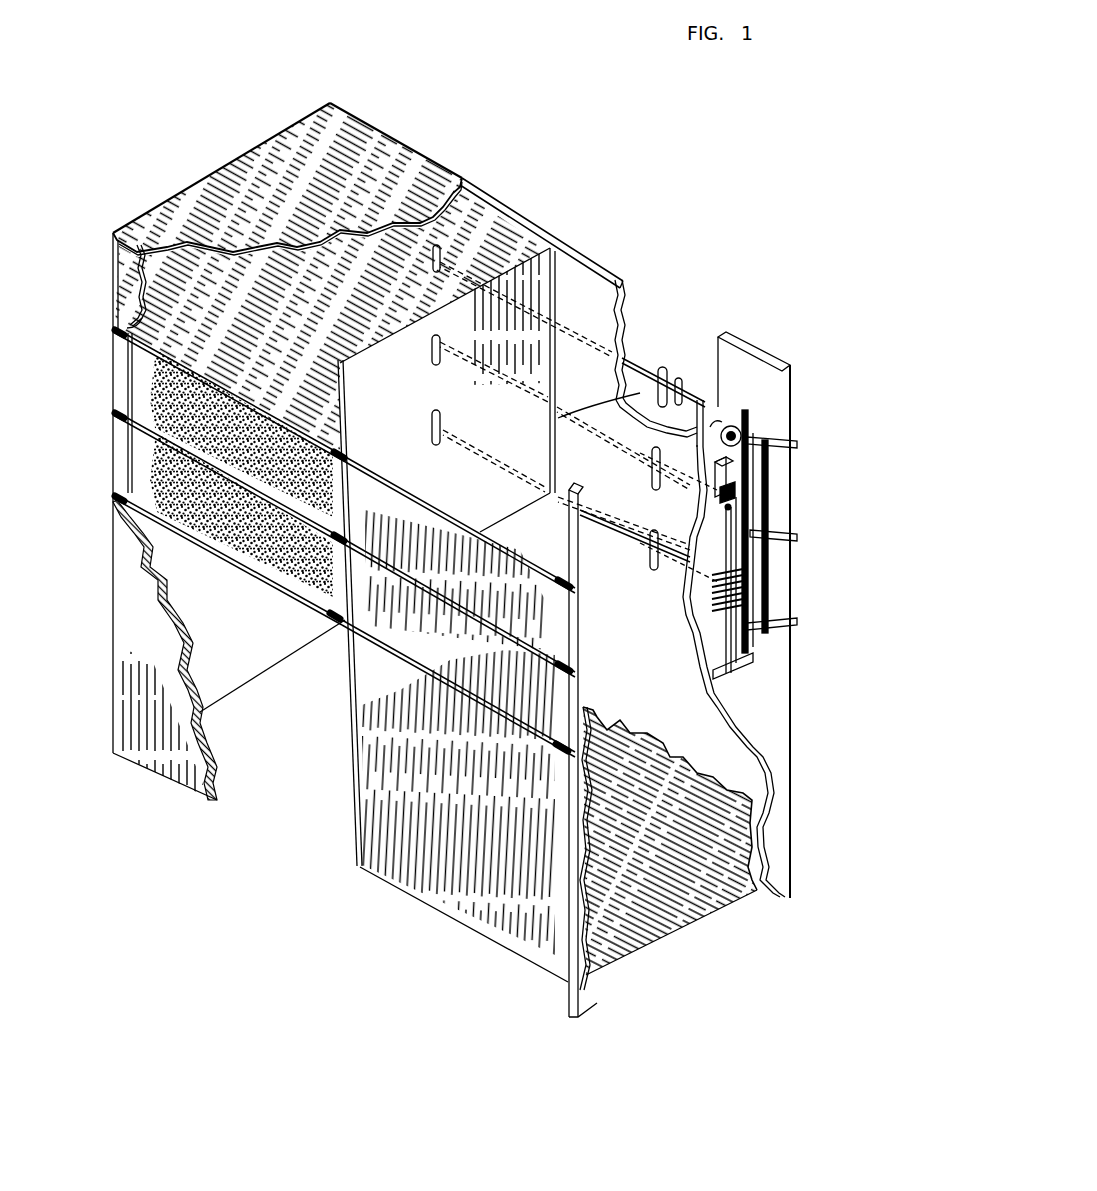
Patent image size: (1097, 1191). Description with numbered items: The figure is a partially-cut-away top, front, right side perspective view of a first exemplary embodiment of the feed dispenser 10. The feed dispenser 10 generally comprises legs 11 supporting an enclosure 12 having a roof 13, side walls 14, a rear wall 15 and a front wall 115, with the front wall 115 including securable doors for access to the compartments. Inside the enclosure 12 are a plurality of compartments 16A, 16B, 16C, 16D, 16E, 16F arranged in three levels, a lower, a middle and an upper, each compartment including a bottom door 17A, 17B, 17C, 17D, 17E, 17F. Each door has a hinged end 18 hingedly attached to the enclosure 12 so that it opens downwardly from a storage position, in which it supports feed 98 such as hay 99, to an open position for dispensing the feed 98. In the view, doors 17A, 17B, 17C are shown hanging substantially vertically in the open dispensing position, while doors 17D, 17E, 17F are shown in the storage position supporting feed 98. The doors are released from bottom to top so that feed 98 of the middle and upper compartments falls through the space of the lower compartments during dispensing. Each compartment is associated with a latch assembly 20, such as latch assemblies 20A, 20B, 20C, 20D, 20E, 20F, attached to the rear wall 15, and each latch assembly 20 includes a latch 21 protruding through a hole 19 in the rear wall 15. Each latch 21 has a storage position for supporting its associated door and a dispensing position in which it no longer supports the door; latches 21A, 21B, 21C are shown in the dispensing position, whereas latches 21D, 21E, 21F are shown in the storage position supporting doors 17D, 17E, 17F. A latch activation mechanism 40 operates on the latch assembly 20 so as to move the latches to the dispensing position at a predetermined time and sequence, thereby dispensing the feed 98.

The feed dispenser 10 is at (726, 268).
The legs 11 is at (583, 1006).
The enclosure 12 is at (582, 193).
The roof 13 is at (352, 136).
The side walls 14 is at (175, 277).
The rear wall 15 is at (519, 215).
The compartment 16A is at (559, 404).
The compartment 16B is at (563, 355).
The compartment 16C is at (569, 290).
The compartment 16D is at (102, 449).
The compartment 16E is at (126, 390).
The compartment 16F is at (104, 322).
The bottom door 17A is at (410, 882).
The bottom door 17B is at (333, 623).
The bottom door 17C is at (367, 498).
The bottom door 17D is at (179, 527).
The bottom door 17E is at (113, 413).
The bottom door 17F is at (303, 293).
The hinged end 18 is at (257, 532).
The hole 19 is at (440, 248).
The latch assembly 20 is at (678, 358).
The latch assembly 20A is at (672, 571).
The latch assembly 20B is at (678, 490).
The latch assembly 20C is at (701, 392).
The latch assembly 20D is at (511, 468).
The latch assembly 20E is at (527, 388).
The latch assembly 20F is at (462, 262).
The latch 21 is at (655, 388).
The latch 21A is at (647, 563).
The latch 21B is at (651, 481).
The latch 21C is at (612, 428).
The latch 21D is at (432, 438).
The latch 21E is at (430, 363).
The latch 21F is at (431, 262).
The latch activation mechanism 40 is at (735, 688).
The feed 98 is at (147, 370).
The hay 99 is at (713, 908).
The front wall 115 is at (134, 258).